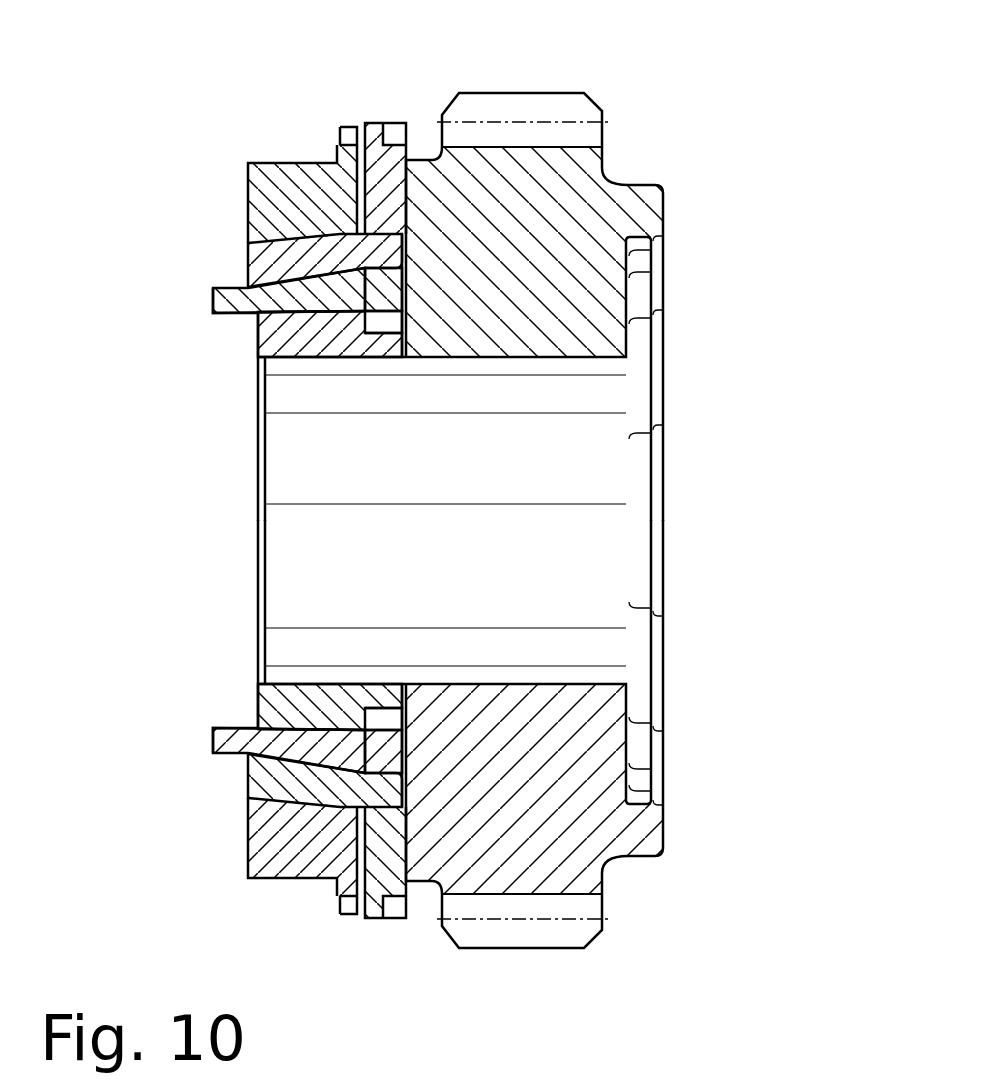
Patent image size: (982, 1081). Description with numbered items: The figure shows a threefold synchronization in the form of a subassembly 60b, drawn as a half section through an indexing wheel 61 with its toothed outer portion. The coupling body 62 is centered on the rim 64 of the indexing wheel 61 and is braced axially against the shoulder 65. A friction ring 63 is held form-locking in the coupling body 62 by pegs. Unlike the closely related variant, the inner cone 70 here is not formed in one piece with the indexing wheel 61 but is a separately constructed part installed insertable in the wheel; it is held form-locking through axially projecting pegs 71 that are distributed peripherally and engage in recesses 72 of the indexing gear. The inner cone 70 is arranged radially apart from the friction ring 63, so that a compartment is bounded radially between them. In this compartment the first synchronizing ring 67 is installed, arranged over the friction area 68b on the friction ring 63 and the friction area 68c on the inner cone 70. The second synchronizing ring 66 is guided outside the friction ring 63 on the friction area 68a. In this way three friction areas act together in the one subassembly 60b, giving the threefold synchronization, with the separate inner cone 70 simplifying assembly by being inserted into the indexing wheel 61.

The subassembly 60b is at (680, 375).
The indexing wheel 61 is at (518, 108).
The coupling body 62 is at (390, 135).
The friction ring 63 is at (248, 262).
The rim 64 is at (425, 330).
The shoulder 65 is at (402, 284).
The second synchronizing ring 66 is at (248, 195).
The first synchronizing ring 67 is at (213, 302).
The friction area 68a is at (316, 238).
The friction area 68b is at (258, 358).
The friction area 68c is at (345, 285).
The inner cone 70 is at (333, 312).
The pegs 71 is at (378, 348).
The recesses 72 is at (405, 343).